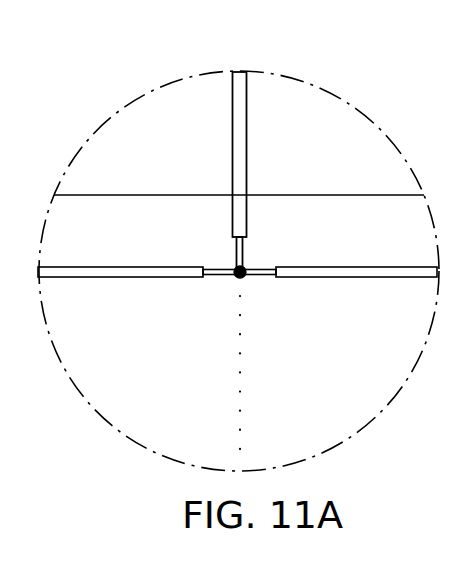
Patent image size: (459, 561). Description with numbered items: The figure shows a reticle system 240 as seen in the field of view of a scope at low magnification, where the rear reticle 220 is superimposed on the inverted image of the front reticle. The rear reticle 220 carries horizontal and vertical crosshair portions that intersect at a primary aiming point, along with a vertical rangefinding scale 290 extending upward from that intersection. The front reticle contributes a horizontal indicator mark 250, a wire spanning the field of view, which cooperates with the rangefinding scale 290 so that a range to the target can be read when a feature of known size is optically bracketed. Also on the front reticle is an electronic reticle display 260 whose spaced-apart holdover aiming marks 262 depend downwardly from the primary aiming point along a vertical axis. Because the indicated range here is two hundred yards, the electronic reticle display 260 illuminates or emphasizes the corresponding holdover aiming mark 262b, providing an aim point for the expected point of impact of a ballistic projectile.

The rear reticle 220 is at (355, 258).
The reticle system 240 is at (373, 103).
The horizontal indicator mark 250 is at (133, 195).
The electronic reticle display 260 is at (255, 385).
The holdover aiming marks 262 is at (247, 279).
The illuminated holdover aiming mark 262b is at (238, 281).
The rangefinding scale 290 is at (250, 148).